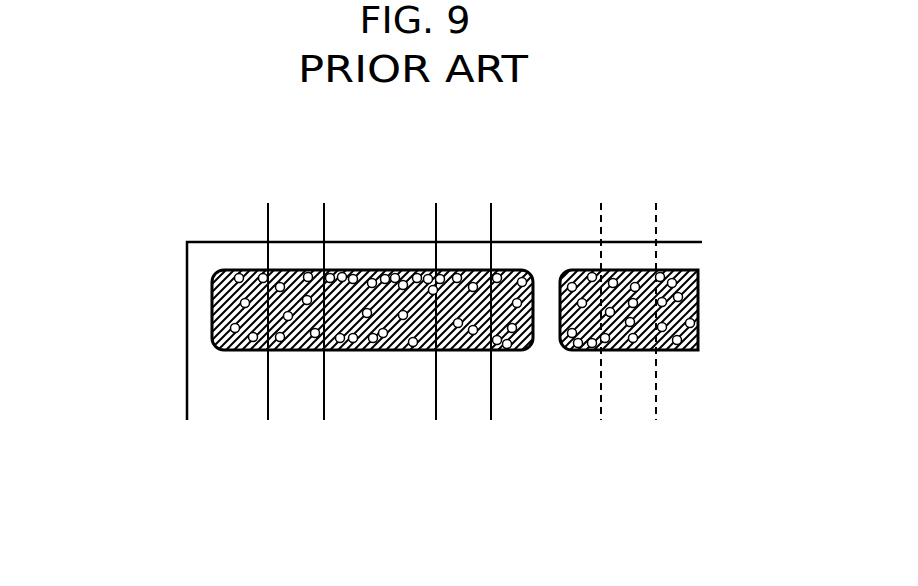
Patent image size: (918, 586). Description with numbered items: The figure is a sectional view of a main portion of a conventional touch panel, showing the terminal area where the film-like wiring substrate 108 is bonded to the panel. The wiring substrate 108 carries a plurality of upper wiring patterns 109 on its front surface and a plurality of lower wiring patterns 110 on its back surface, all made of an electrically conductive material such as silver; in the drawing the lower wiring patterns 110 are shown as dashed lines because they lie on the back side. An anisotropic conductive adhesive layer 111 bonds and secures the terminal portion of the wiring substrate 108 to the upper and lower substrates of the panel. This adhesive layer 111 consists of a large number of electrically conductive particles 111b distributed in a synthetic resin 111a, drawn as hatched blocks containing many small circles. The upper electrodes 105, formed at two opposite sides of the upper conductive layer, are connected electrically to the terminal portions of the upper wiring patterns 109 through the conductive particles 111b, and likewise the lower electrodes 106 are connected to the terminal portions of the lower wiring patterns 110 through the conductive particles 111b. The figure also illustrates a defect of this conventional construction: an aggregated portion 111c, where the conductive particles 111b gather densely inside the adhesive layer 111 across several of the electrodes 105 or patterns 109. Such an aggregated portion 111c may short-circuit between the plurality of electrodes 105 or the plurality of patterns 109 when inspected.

The upper electrodes 105 is at (296, 223).
The lower electrodes 106 is at (626, 223).
The wiring substrate 108 is at (215, 250).
The upper wiring patterns 109 is at (300, 403).
The lower wiring patterns 110 is at (626, 405).
The anisotropic conductive adhesive layer 111 is at (322, 239).
The synthetic resin 111a is at (695, 338).
The electrically conductive particles 111b is at (693, 322).
The aggregated portion 111c is at (373, 280).